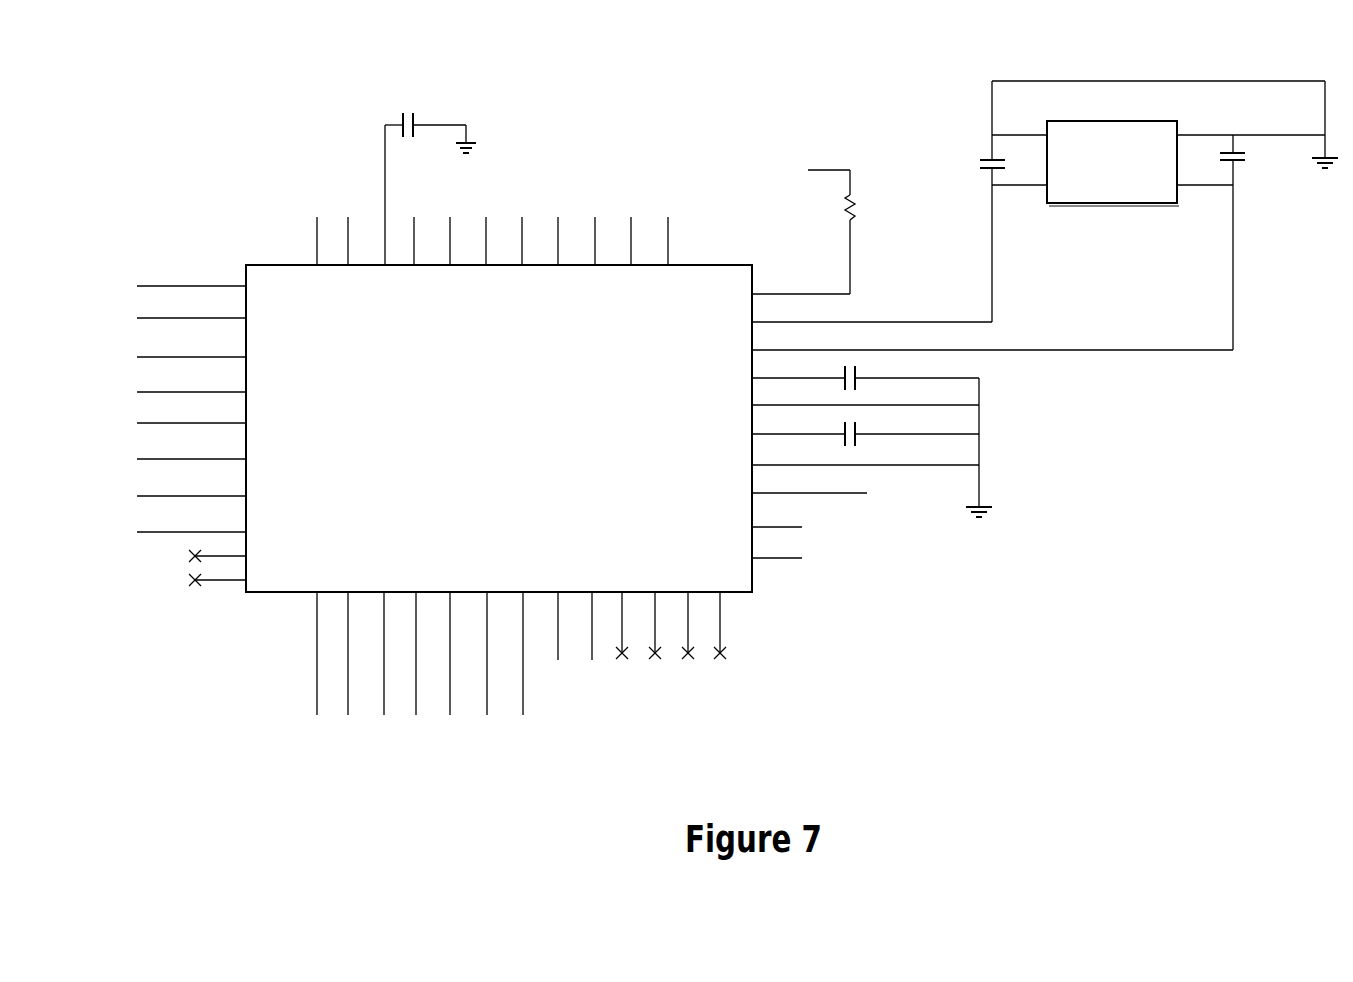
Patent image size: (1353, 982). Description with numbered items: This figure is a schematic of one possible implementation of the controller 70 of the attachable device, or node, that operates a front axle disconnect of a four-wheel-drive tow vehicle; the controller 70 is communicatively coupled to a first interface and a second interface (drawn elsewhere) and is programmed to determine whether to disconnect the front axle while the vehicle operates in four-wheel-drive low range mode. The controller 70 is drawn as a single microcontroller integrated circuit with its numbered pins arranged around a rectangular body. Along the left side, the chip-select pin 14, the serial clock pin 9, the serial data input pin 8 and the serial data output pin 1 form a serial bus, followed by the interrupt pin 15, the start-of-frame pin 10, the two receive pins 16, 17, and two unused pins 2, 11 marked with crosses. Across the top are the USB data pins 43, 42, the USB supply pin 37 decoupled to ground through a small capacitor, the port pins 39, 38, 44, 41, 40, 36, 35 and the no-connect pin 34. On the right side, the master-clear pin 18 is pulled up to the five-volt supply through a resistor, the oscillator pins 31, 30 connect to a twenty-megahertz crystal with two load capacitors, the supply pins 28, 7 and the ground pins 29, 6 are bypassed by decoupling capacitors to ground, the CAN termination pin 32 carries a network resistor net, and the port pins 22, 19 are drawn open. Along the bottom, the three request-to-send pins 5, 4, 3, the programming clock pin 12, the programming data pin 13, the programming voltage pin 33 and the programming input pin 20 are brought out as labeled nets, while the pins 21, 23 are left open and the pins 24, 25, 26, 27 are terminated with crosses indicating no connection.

The controller 70 is at (705, 59).
The pin 14 RB4 (CS) 14 is at (209, 282).
The pin 9 SCK/RB1 (MSCK) 9 is at (224, 314).
The pin 8 SDI/RB0 (MSI) 8 is at (222, 353).
The pin 1 SDO/RC7 (MSO) 1 is at (225, 388).
The pin 15 RB5 (INT) 15 is at (209, 419).
The pin 10 INT2/RB2 (SOF) 10 is at (226, 455).
The pin 16 RB6 (RXB1) 16 is at (209, 491).
The pin 17 RB7 (RXB0) 17 is at (209, 527).
The pin 2 RD4 2 is at (236, 551).
The pin 11 RB3 11 is at (235, 575).
The pin 43 D+ 43 is at (314, 258).
The pin 42 D- 42 is at (345, 258).
The pin 37 VUSB with 220nF capacitor 37 is at (423, 211).
The pin 39 RD1 39 is at (411, 260).
The pin 38 RD0 38 is at (447, 260).
The pin 44 RC6 44 is at (483, 260).
The pin 41 RD3 41 is at (519, 260).
The pin 40 RD2 40 is at (555, 260).
The pin 36 RC2 36 is at (592, 260).
The pin 35 RC1 35 is at (628, 260).
The pin 34 NC 34 is at (665, 257).
The pin 18 MCLR with R9 pull-up 18 is at (800, 224).
The pin 31 OSC2 with crystal X1 and C5 31 is at (1026, 205).
The pin 30 OSC1 with C4 30 is at (997, 246).
The pin 28 VDD1 with C1 28 is at (845, 382).
The pin 29 VSS1 29 is at (847, 400).
The pin 7 VDD2 with C1 7 is at (845, 438).
The pin 6 VSS2 to ground 6 is at (853, 447).
The pin 32 RC0 (CAN_RES) 32 is at (799, 488).
The pin 22 RA3 22 is at (760, 522).
The pin 19 RA0 19 is at (760, 553).
The pin 5 RD7 (RTS0) 5 is at (313, 638).
The pin 4 RD6 (RTS1) 4 is at (344, 637).
The pin 3 RD5 (RTS2) 3 is at (380, 638).
The pin 12 ICPGC (PGC) 12 is at (412, 631).
The pin 13 ICPGD (PGD) 13 is at (446, 630).
The pin 33 ICVpp (VPP) 33 is at (483, 632).
The pin 20 RA1 (PGI) 20 is at (519, 638).
The pin 21 RA2 21 is at (554, 611).
The pin 23 RA4 23 is at (588, 611).
The pin 24 RA5 24 is at (618, 610).
The pin 25 RE0 25 is at (651, 611).
The pin 26 RE1 26 is at (684, 611).
The pin 27 RE2 27 is at (716, 611).